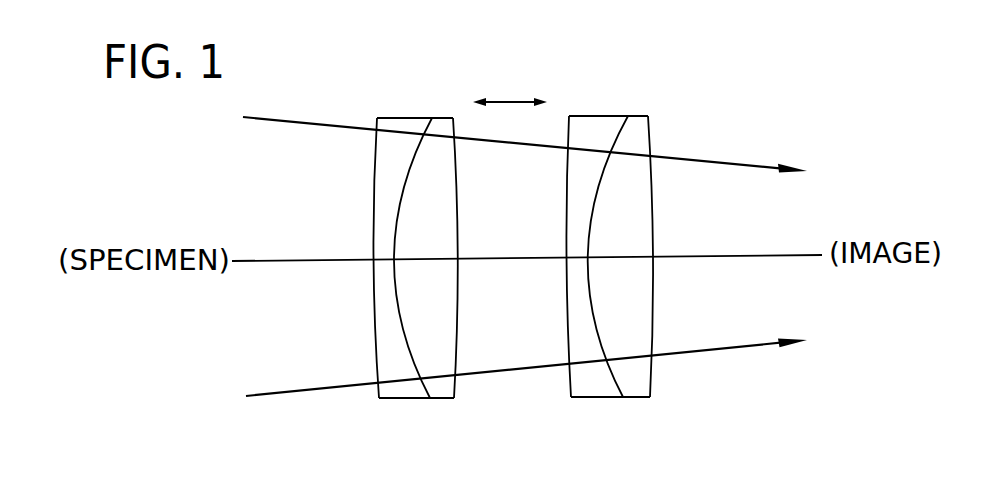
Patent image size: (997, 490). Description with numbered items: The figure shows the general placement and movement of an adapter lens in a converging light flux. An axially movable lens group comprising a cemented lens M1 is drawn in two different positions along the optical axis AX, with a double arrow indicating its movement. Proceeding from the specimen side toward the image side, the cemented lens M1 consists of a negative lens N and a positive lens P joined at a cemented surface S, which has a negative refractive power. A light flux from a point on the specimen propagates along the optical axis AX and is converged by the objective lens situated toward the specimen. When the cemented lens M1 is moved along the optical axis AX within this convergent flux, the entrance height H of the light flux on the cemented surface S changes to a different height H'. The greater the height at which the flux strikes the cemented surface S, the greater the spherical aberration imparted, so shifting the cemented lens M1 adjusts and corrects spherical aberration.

The cemented lens M1 is at (553, 237).
The negative lens N is at (398, 396).
The cemented surface S is at (431, 395).
The positive lens P is at (455, 388).
The entrance height H is at (417, 98).
The entrance height H' is at (615, 106).
The optical axis AX is at (758, 256).